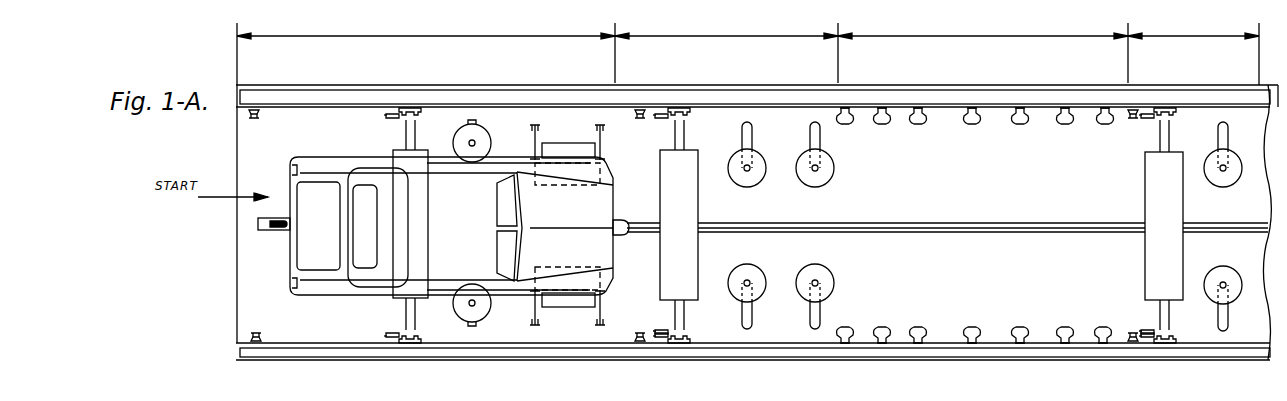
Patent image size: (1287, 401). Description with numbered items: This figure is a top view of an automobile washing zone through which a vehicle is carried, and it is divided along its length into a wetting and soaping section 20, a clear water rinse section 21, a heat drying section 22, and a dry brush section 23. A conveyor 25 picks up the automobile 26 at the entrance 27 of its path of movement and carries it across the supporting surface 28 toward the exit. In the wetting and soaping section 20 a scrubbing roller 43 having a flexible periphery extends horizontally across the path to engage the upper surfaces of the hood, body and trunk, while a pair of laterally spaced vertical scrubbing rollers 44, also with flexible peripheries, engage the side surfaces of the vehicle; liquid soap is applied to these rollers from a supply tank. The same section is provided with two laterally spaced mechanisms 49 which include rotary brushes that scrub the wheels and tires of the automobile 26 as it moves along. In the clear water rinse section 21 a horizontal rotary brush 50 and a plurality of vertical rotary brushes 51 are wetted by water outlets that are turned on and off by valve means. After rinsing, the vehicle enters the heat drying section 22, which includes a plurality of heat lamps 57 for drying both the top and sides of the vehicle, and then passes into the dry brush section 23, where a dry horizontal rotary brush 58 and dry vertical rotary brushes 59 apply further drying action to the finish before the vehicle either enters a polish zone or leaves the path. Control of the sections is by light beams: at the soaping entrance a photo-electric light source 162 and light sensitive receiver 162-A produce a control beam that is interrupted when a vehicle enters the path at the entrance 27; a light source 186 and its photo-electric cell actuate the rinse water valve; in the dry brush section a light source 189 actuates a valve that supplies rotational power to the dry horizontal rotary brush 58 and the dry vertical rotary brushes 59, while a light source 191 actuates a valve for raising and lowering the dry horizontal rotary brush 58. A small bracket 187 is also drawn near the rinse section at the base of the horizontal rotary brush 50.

The wetting and soaping section 20 is at (392, 35).
The clear water rinse section 21 is at (730, 34).
The heat drying section 22 is at (1010, 35).
The dry brush section 23 is at (1205, 35).
The conveyor 25 is at (976, 230).
The automobile 26 is at (460, 232).
The entrance 27 is at (255, 258).
The supporting surface 28 is at (1010, 196).
The scrubbing roller 43 is at (405, 285).
The vertical scrubbing rollers 44 is at (480, 140).
The laterally spaced mechanisms 49 is at (594, 141).
The horizontal rotary brush 50 is at (688, 218).
The vertical rotary brushes 51 is at (829, 171).
The heat lamps 57 is at (968, 121).
The dry horizontal rotary brush 58 is at (1150, 250).
The dry vertical rotary brushes 59 is at (1230, 176).
The photo-electric light source 162 is at (259, 334).
The light sensitive receiver 162-A is at (257, 116).
The light source 186 is at (640, 334).
The brush mounting bracket 187 is at (662, 330).
The light source 189 is at (1130, 336).
The light source 191 is at (1142, 329).